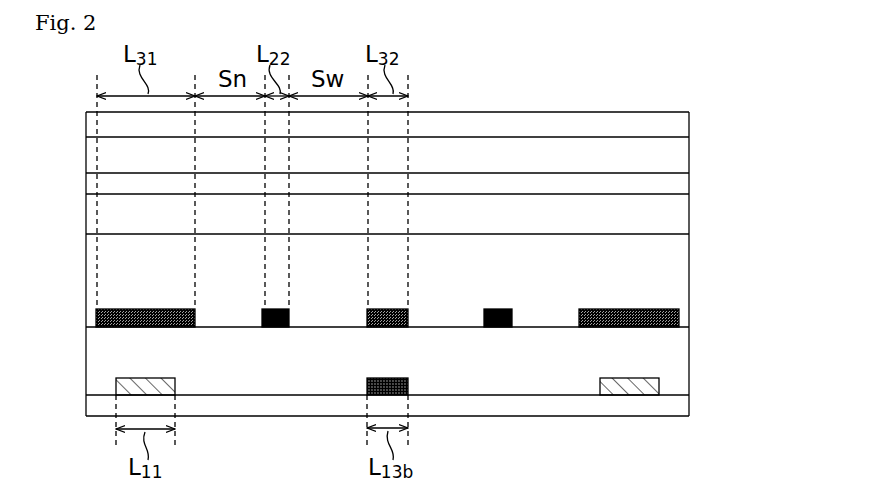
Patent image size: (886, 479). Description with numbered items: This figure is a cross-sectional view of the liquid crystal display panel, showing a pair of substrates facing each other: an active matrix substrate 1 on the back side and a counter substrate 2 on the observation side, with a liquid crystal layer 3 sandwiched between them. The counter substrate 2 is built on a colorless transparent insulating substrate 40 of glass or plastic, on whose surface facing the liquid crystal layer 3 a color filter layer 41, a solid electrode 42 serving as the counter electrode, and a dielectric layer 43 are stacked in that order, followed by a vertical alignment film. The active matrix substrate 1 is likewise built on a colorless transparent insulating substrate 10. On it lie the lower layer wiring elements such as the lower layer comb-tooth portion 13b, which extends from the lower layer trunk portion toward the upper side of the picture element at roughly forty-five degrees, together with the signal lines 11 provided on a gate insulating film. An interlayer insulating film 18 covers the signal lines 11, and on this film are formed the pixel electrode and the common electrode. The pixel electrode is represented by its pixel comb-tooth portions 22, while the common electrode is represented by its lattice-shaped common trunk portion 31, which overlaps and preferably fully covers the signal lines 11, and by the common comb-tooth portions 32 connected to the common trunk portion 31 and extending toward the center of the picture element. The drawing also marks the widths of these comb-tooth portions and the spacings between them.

The active matrix substrate 1 is at (754, 330).
The counter substrate 2 is at (754, 112).
The liquid crystal layer 3 is at (683, 262).
The insulating substrate 10 is at (683, 405).
The signal lines 11 is at (116, 388).
The lower layer comb-tooth portion 13b is at (367, 386).
The interlayer insulating film 18 is at (683, 351).
The pixel comb-tooth portions 22 is at (276, 327).
The common trunk portion 31 is at (96, 320).
The common comb-tooth portions 32 is at (390, 327).
The insulating substrate 40 is at (683, 125).
The color filter layer 41 is at (683, 156).
The solid electrode 42 is at (683, 186).
The dielectric layer 43 is at (683, 216).